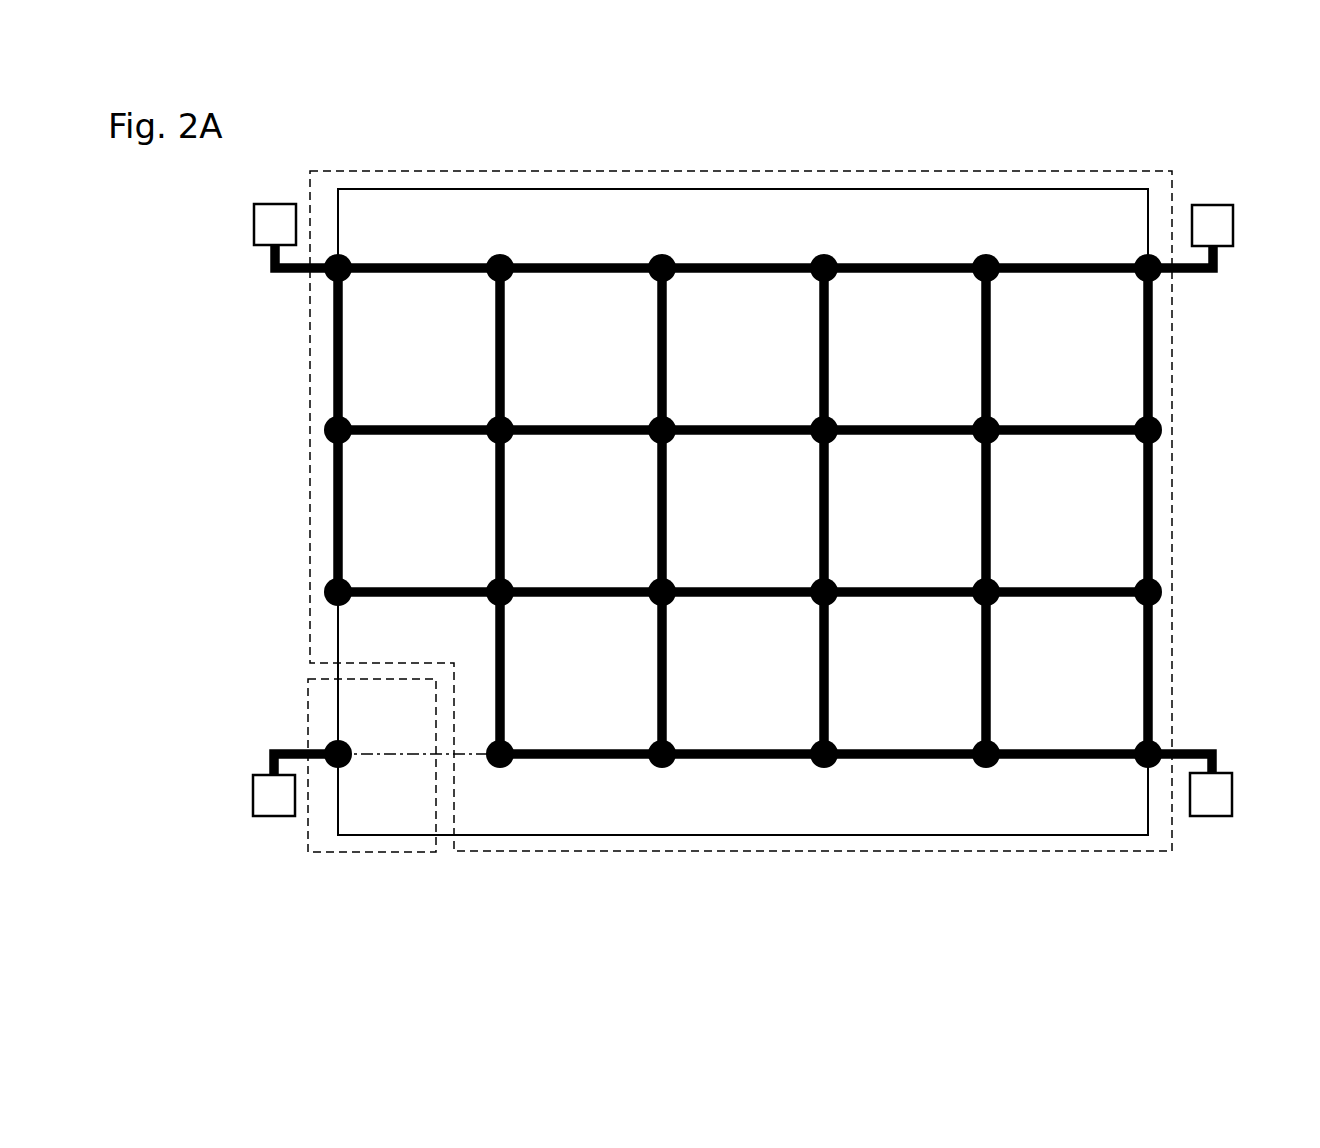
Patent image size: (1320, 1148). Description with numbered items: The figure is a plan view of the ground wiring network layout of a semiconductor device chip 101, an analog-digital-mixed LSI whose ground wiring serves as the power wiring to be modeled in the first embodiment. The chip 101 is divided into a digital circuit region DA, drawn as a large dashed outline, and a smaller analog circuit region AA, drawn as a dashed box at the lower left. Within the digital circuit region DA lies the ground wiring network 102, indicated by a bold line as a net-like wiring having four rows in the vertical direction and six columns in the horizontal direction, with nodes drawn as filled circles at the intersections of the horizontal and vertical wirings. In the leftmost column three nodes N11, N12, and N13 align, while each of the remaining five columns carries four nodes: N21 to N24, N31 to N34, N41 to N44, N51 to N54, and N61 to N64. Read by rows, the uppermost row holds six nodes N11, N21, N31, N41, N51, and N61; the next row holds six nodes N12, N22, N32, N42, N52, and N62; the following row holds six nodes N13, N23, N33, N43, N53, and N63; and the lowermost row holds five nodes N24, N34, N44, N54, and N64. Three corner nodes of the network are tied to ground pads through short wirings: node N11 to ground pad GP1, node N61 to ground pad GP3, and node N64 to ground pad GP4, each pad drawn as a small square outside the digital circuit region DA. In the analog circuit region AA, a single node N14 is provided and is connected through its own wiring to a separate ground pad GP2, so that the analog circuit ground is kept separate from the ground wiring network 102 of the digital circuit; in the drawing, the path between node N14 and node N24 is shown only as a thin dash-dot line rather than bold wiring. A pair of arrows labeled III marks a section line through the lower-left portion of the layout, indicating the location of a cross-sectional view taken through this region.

The digital circuit region DA is at (1040, 171).
The analog circuit region AA is at (343, 855).
The semiconductor device chip 101 is at (1137, 189).
The ground wiring network 102 is at (1153, 378).
The ground pad GP1 is at (267, 236).
The ground pad GP2 is at (264, 785).
The ground pad GP3 is at (1220, 236).
The ground pad GP4 is at (1218, 785).
The section line III is at (350, 768).
The node N11 is at (363, 284).
The node N21 is at (525, 284).
The node N31 is at (687, 284).
The node N41 is at (849, 284).
The node N51 is at (1011, 284).
The node N61 is at (1126, 284).
The node N12 is at (363, 446).
The node N22 is at (525, 446).
The node N32 is at (687, 446).
The node N42 is at (849, 446).
The node N52 is at (1011, 446).
The node N62 is at (1126, 446).
The node N13 is at (363, 608).
The node N23 is at (525, 608).
The node N33 is at (687, 608).
The node N43 is at (849, 608).
The node N53 is at (1011, 608).
The node N63 is at (1126, 608).
The node N14 is at (363, 741).
The node N24 is at (525, 741).
The node N34 is at (687, 769).
The node N44 is at (849, 769).
The node N54 is at (1010, 769).
The node N64 is at (1123, 766).